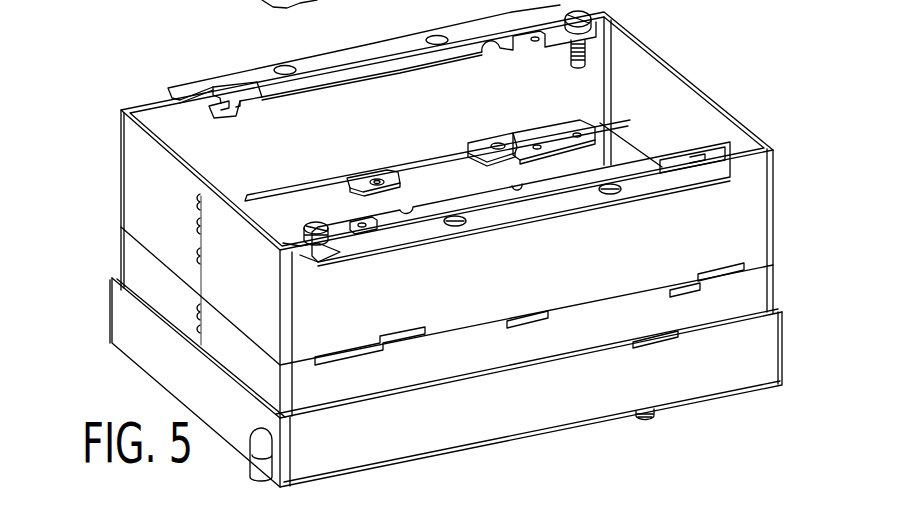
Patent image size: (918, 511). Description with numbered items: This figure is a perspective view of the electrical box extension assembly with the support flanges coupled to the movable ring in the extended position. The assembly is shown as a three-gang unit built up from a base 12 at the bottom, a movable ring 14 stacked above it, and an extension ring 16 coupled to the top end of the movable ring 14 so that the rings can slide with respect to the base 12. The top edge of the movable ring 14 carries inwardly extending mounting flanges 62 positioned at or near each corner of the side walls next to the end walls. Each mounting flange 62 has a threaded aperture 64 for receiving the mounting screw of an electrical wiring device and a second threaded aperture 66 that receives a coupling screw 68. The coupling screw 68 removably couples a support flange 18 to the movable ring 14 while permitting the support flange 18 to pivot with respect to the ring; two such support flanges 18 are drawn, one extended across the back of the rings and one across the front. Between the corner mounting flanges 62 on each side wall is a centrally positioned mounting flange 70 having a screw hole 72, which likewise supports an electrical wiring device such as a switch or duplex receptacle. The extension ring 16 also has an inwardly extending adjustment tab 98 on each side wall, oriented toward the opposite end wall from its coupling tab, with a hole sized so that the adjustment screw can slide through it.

The base 12 is at (112, 307).
The movable ring 14 is at (121, 256).
The extension ring 16 is at (121, 160).
The support flange 18 is at (265, 66).
The mounting flange 62 is at (556, 141).
The threaded aperture 64 is at (537, 144).
The threaded aperture 66 is at (577, 131).
The coupling screw 68 is at (319, 224).
The centrally positioned mounting flange 70 is at (347, 179).
The screw hole 72 is at (378, 177).
The adjustment tab 98 is at (463, 161).